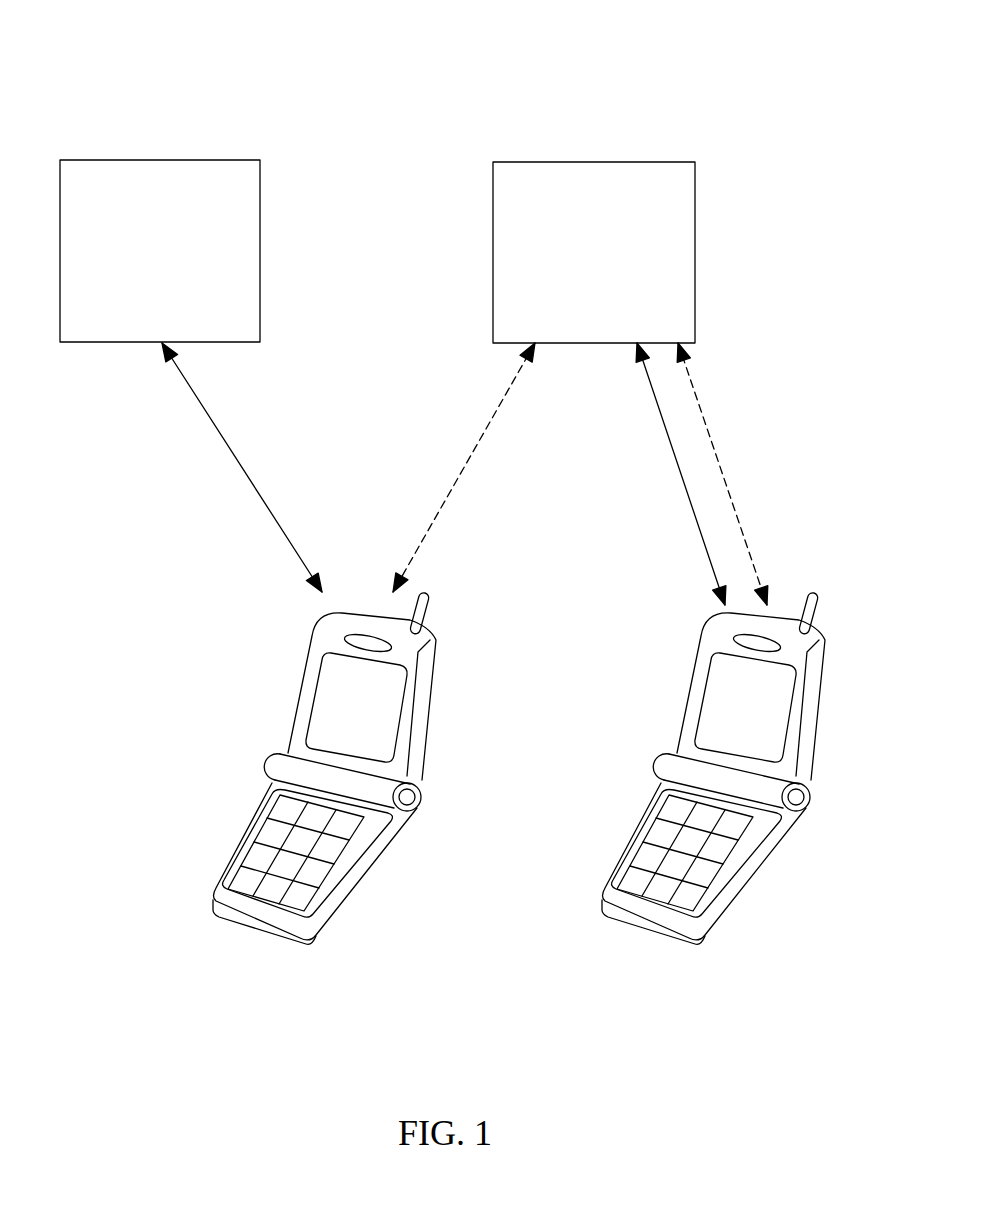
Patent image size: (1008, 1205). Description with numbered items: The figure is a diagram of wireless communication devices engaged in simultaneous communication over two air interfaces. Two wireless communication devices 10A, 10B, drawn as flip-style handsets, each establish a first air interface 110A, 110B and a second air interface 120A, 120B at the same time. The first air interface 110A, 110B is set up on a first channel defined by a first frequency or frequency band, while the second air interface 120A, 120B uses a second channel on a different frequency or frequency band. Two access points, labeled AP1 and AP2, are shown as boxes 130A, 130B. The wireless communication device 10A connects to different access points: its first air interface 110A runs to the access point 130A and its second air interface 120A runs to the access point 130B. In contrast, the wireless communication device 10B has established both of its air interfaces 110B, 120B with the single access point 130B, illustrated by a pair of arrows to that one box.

The access point 130A is at (173, 160).
The access point 130B is at (595, 162).
The first air interface 110A is at (258, 497).
The second air interface 120A is at (450, 493).
The first air interface 110B is at (698, 528).
The second air interface 120B is at (717, 463).
The wireless communication device 10A is at (227, 918).
The wireless communication device 10B is at (616, 918).